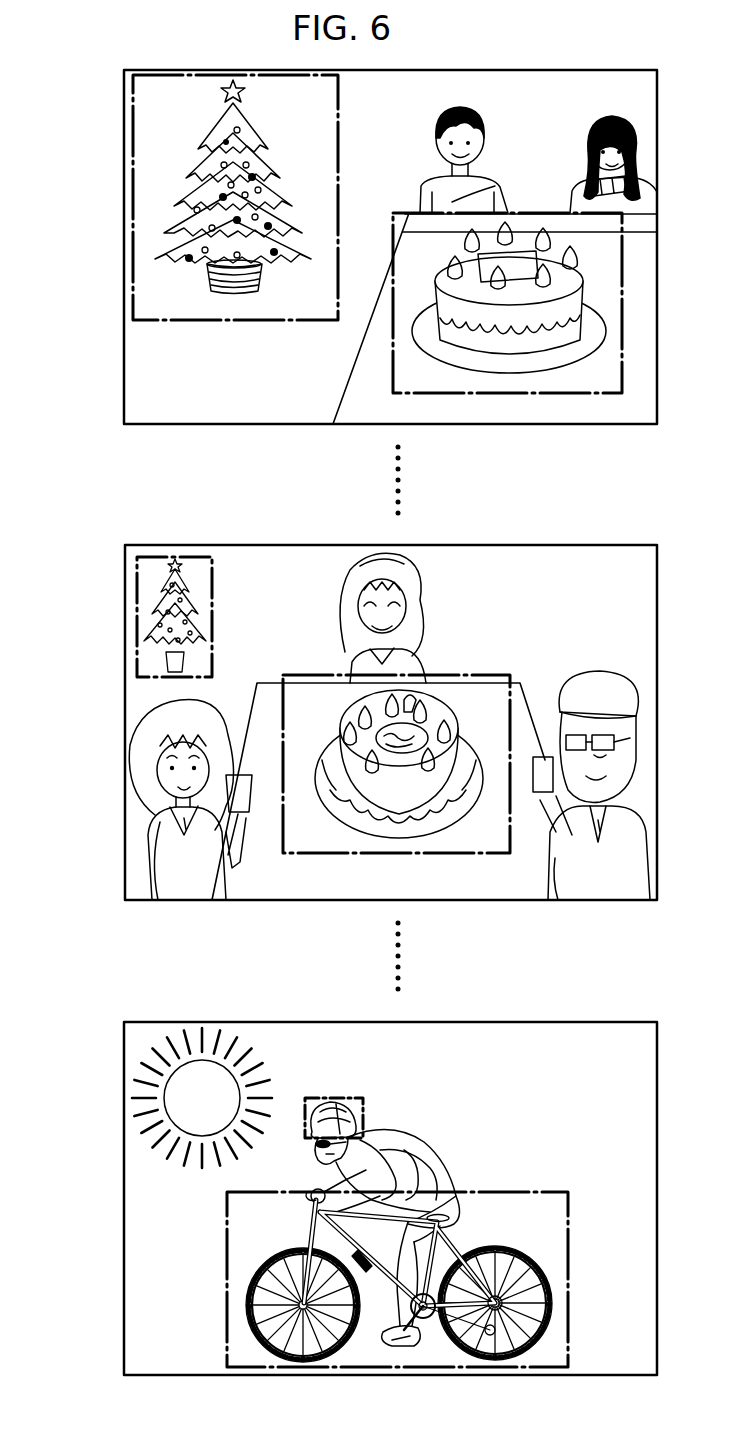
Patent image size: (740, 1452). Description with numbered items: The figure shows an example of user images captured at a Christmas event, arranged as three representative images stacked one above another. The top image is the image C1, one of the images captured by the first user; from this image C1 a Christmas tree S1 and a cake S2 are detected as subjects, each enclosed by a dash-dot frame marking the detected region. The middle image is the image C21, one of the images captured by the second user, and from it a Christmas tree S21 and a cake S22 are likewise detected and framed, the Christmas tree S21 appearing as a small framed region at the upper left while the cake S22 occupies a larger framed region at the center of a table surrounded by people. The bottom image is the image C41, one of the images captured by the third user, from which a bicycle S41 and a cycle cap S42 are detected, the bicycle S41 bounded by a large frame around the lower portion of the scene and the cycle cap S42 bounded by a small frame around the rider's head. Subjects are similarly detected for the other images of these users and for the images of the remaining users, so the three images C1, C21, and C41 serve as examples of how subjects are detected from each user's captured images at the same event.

The image C1 is at (390, 247).
The Christmas tree S1 is at (133, 178).
The cake S2 is at (540, 393).
The image C21 is at (391, 722).
The Christmas tree S21 is at (137, 660).
The cake S22 is at (483, 677).
The image C41 is at (390, 1198).
The bicycle S41 is at (520, 1192).
The cycle cap S42 is at (363, 1112).